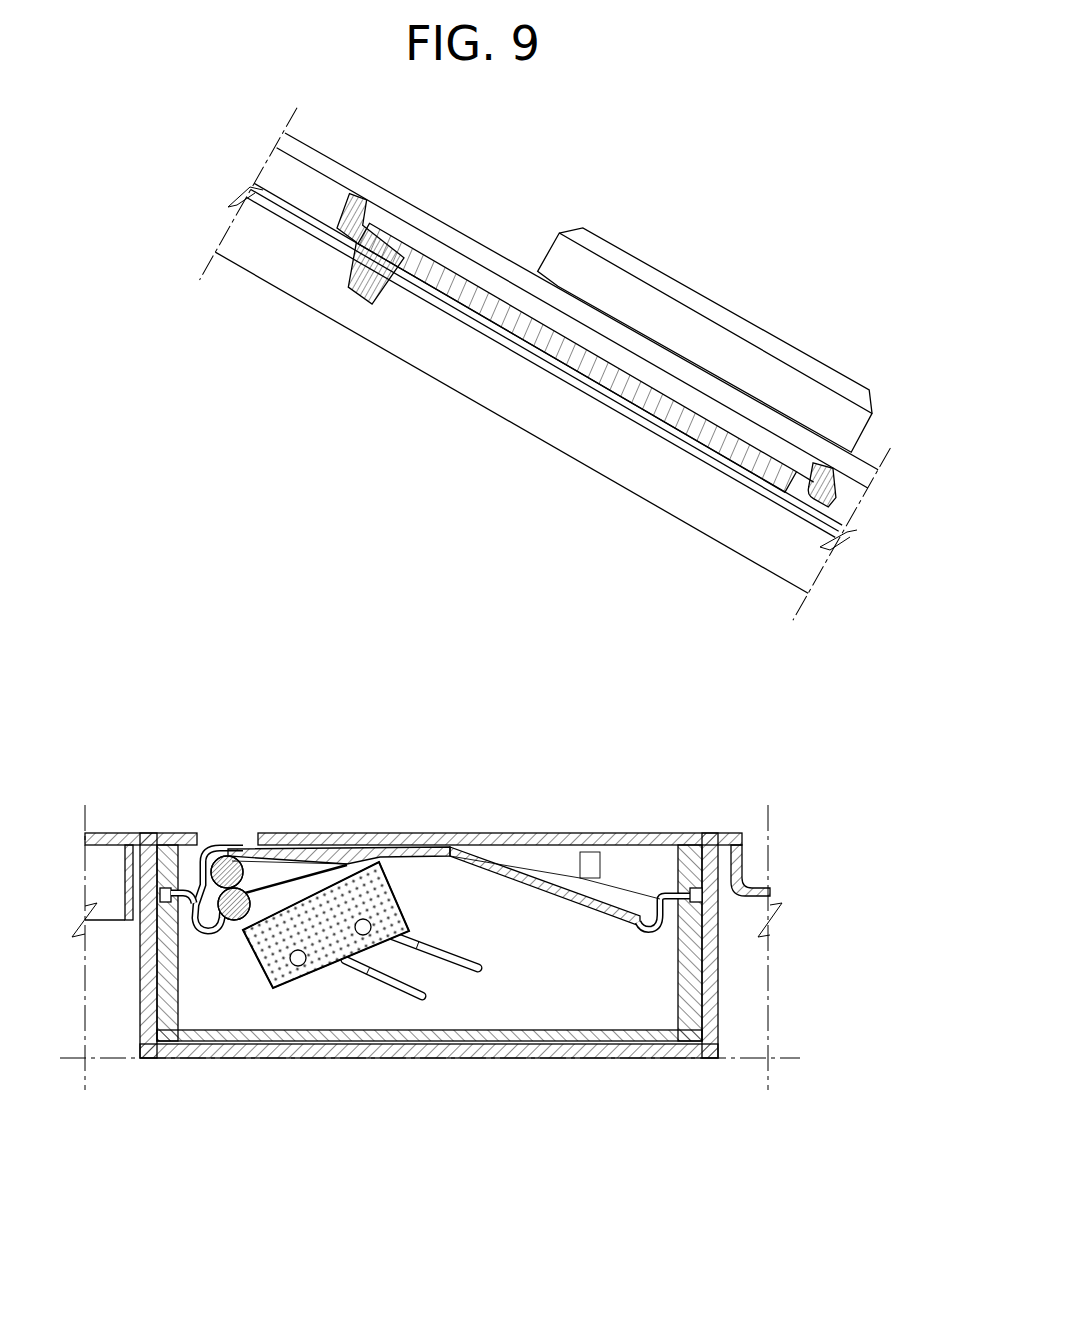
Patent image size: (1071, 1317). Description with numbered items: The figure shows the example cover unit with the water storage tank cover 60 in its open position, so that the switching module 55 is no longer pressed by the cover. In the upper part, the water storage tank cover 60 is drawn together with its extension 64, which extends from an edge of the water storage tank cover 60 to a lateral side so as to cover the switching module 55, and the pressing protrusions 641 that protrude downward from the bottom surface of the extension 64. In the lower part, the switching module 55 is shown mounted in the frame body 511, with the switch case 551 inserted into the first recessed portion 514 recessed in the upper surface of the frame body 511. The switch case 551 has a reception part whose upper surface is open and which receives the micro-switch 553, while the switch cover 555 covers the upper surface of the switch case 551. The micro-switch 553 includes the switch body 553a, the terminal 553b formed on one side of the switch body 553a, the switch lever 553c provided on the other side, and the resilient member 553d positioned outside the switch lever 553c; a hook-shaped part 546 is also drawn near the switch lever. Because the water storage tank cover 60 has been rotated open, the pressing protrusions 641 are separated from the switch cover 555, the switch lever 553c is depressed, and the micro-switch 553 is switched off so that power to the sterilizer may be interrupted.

The water storage tank cover 60 is at (721, 285).
The extension 64 is at (463, 285).
The pressing protrusions 641 is at (378, 270).
The hook portion 546 is at (233, 845).
The switch body 553a is at (273, 970).
The terminal 553b is at (377, 980).
The switch lever 553c is at (210, 880).
The resilient member 553d is at (172, 900).
The micro-switch 553 is at (312, 1009).
The switch case 551 is at (373, 1037).
The switch cover 555 is at (427, 847).
The switching module 55 is at (424, 1029).
The first recessed portion 514 is at (582, 1008).
The frame body 511 is at (657, 1045).